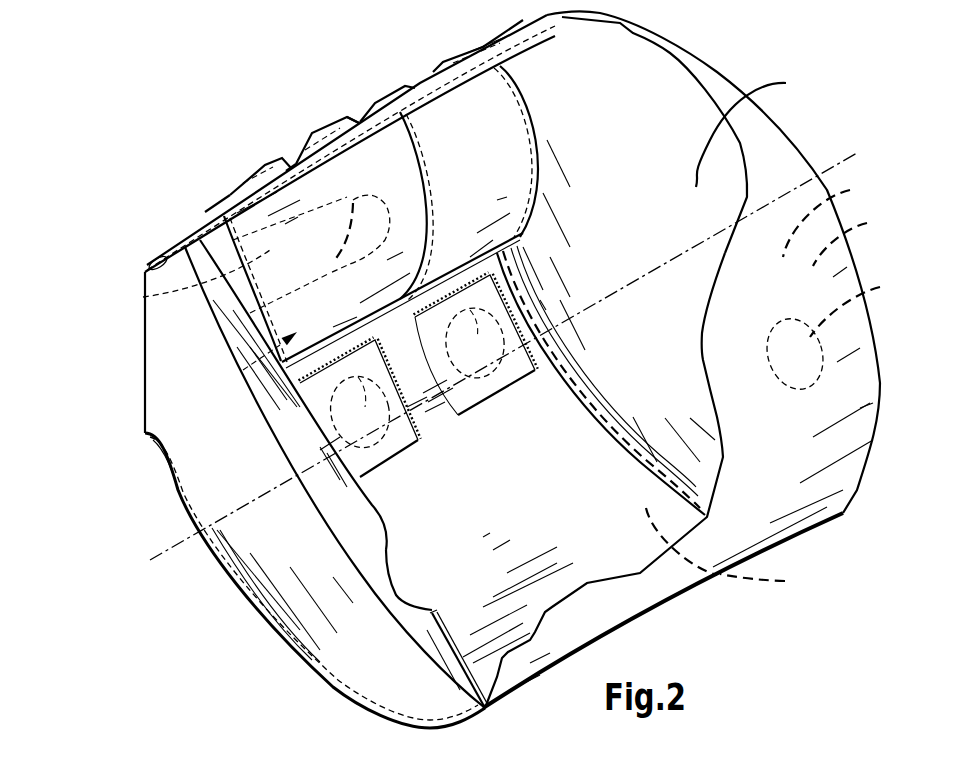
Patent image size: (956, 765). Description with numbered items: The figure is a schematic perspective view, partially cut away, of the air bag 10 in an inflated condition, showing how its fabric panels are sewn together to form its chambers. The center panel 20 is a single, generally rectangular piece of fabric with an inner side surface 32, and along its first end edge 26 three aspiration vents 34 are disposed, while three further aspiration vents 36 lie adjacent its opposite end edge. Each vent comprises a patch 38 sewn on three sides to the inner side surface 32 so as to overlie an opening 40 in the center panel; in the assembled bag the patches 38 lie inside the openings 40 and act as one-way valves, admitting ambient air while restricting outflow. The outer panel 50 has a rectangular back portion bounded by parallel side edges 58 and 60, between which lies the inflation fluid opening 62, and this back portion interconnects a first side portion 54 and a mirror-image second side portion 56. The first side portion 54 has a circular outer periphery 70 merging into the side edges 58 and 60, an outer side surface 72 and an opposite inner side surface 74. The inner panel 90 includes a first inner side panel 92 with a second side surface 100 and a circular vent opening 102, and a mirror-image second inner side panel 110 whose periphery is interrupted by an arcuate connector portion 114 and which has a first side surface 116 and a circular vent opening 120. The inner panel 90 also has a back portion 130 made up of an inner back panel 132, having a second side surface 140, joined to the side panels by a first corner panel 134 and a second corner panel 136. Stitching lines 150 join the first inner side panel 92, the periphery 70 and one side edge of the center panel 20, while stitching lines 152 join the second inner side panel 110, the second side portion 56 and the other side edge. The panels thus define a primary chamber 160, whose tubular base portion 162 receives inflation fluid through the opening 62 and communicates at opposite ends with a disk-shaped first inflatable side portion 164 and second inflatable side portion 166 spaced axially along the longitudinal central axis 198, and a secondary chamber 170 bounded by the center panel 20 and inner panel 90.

The air bag 10 is at (856, 105).
The center panel 20 is at (700, 596).
The first end edge 26 is at (297, 180).
The inner side surface 32 is at (643, 604).
The aspiration vents 34 is at (237, 187).
The aspiration vents 36 is at (385, 472).
The patch 38 is at (413, 447).
The opening 40 is at (415, 379).
The outer panel 50 is at (140, 360).
The first side portion 54 is at (212, 472).
The second side portion 56 is at (867, 223).
The side edge 58 is at (145, 272).
The side edge 60 is at (145, 432).
The inflation fluid opening 62 is at (340, 256).
The circular outer periphery 70 is at (240, 607).
The outer side surface 72 is at (320, 517).
The inner side surface 74 is at (297, 623).
The inner panel 90 is at (670, 105).
The first inner side panel 92 is at (402, 519).
The second side surface 100 is at (392, 582).
The vent opening 102 is at (420, 603).
The second inner side panel 110 is at (623, 400).
The arcuate connector portion 114 is at (548, 118).
The first side surface 116 is at (761, 129).
The vent opening 120 is at (883, 285).
The back portion 130 is at (283, 168).
The inner back panel 132 is at (353, 170).
The first corner panel 134 is at (220, 247).
The second corner panel 136 is at (466, 61).
The second side surface 140 is at (327, 310).
The stitching lines 150 is at (457, 710).
The stitching lines 152 is at (648, 500).
The primary chamber 160 is at (243, 370).
The base portion 162 is at (143, 297).
The first inflatable side portion 164 is at (321, 444).
The second inflatable side portion 166 is at (848, 189).
The secondary chamber 170 is at (771, 582).
The longitudinal central axis 198 is at (172, 547).